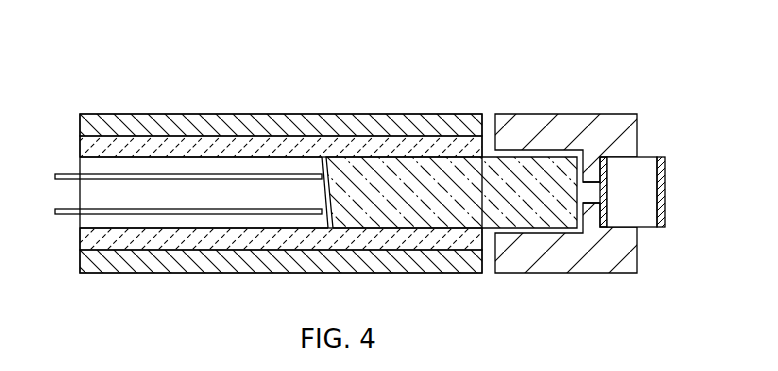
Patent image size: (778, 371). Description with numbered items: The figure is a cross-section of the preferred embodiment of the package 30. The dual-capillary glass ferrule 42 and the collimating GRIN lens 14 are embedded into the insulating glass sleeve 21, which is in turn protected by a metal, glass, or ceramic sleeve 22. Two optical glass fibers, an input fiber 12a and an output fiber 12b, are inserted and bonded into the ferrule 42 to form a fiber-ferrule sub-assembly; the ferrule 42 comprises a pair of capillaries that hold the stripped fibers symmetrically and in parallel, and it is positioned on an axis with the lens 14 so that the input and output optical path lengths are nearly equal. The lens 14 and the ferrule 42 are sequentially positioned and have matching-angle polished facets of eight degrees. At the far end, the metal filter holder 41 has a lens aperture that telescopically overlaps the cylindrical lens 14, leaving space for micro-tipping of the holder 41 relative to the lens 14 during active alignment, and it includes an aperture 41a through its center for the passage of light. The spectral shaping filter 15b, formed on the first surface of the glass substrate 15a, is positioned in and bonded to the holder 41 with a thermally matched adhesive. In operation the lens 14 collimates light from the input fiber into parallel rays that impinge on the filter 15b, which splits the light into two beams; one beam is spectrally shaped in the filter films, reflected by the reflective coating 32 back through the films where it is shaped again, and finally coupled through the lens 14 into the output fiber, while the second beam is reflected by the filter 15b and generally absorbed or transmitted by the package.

The sensor assembly 30 is at (455, 78).
The filter holder 41 is at (597, 114).
The aperture 41a is at (590, 204).
The insulating glass sleeve 21 is at (157, 142).
The metal sleeve 22 is at (250, 125).
The collimating GRIN lens 14 is at (386, 164).
The reflective coating 32 is at (661, 156).
The input optical glass fiber 12a is at (68, 174).
The output optical glass fiber 12b is at (70, 214).
The dual-capillary glass ferrule 42 is at (161, 203).
The glass substrate 15a is at (647, 220).
The spectral shaping filter 15b is at (604, 228).